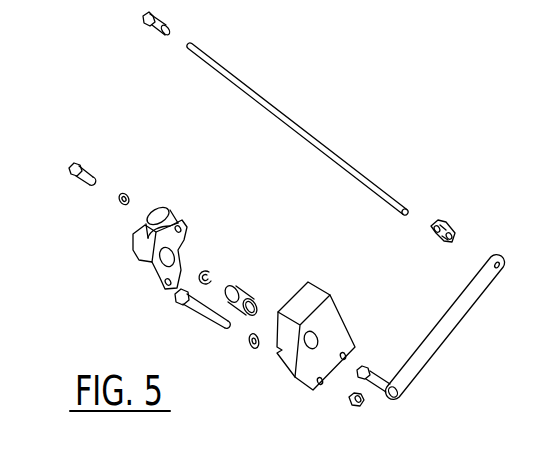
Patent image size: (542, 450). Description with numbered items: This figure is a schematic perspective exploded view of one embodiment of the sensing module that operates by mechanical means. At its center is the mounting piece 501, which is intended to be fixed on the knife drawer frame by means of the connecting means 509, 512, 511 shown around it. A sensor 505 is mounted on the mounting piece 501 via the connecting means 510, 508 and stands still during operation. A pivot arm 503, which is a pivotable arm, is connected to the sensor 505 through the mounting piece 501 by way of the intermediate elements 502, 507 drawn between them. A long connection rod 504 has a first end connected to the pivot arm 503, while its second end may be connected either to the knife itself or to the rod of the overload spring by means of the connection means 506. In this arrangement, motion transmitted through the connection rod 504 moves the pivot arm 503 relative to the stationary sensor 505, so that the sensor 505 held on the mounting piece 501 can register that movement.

The mounting piece 501 is at (295, 378).
The intermediate element 502 is at (240, 287).
The pivot arm 503 is at (448, 336).
The connection rod 504 is at (309, 131).
The sensor 505 is at (146, 258).
The connection means 506 is at (155, 17).
The intermediate element 507 is at (209, 270).
The connecting means 508 is at (128, 192).
The connecting means 509 is at (248, 340).
The connecting means 510 is at (80, 170).
The connecting means 511 is at (182, 304).
The connecting means 512 is at (348, 404).